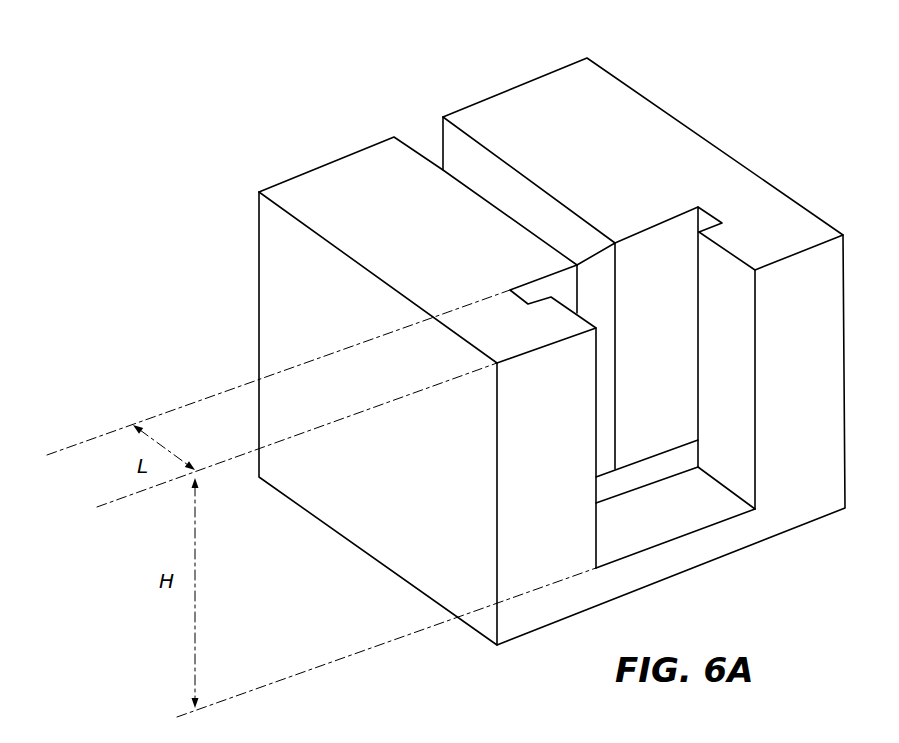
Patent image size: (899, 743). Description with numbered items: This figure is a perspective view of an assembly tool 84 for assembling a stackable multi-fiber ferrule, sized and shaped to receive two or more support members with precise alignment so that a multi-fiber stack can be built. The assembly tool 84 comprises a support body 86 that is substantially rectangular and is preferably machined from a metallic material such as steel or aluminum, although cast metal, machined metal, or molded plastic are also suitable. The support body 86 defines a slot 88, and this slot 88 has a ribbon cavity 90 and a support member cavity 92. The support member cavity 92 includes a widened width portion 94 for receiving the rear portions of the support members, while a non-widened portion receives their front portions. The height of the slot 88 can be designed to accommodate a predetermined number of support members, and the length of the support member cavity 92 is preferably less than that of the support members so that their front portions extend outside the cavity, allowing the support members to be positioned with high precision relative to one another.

The assembly tool 84 is at (352, 33).
The support body 86 is at (597, 108).
The slot 88 is at (579, 233).
The ribbon cavity 90 is at (409, 124).
The support member cavity 92 is at (687, 406).
The widened width portion 94 is at (683, 238).